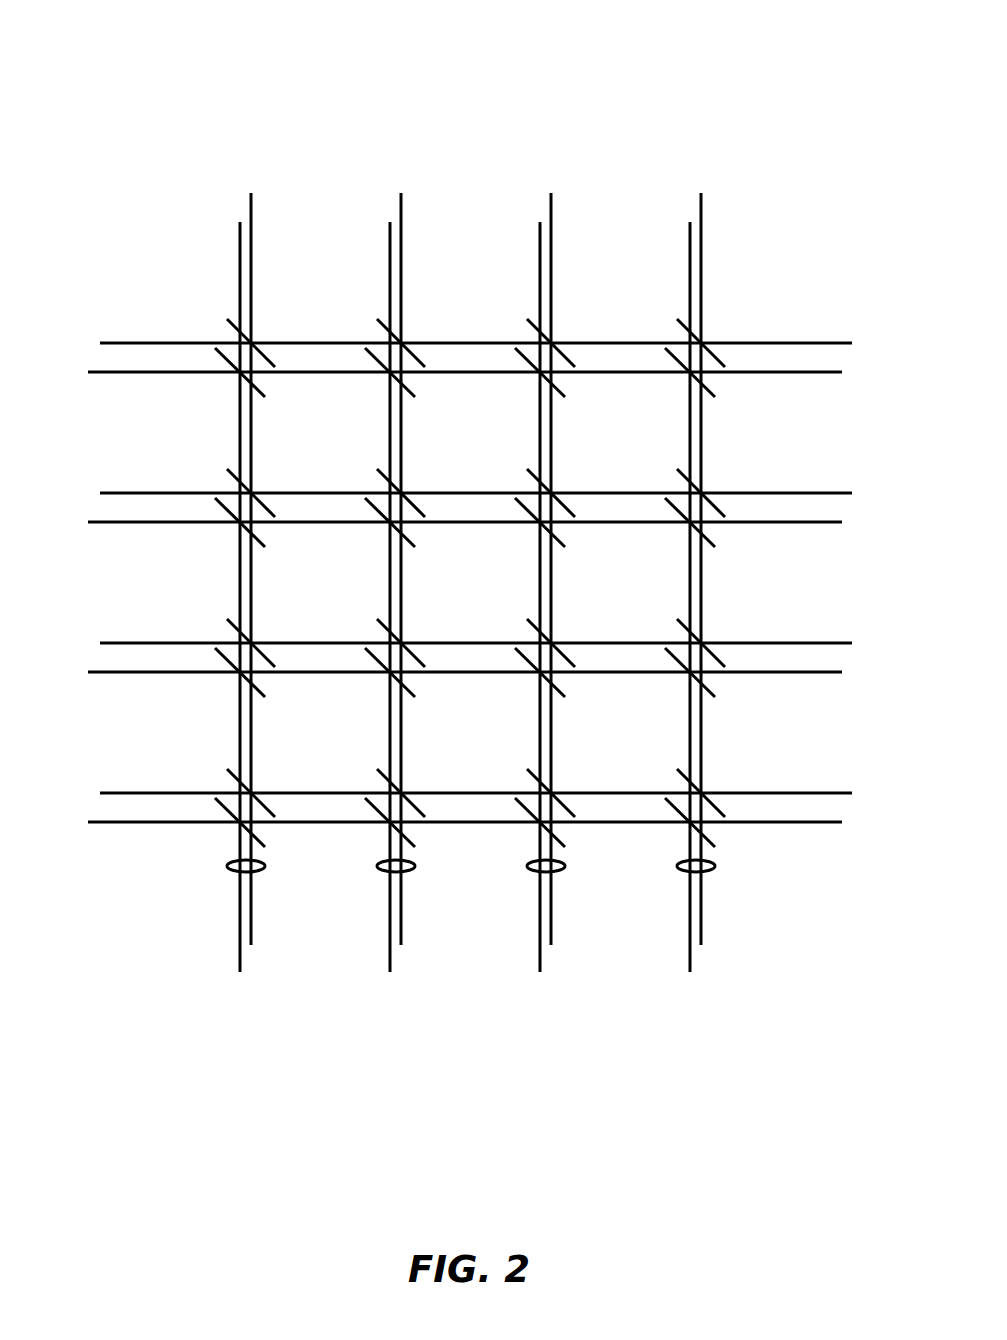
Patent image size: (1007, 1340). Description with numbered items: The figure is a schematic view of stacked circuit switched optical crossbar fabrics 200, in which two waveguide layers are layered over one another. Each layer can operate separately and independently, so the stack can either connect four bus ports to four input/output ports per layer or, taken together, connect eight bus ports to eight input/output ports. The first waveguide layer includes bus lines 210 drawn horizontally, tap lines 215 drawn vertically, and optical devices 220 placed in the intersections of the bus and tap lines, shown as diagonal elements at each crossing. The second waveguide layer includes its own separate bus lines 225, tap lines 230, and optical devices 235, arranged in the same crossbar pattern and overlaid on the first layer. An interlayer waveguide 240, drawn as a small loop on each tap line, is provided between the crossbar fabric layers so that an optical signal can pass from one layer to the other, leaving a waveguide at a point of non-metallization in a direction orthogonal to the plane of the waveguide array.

The stacked circuit switched optical crossbar fabrics 200 is at (160, 100).
The bus lines 210 is at (123, 372).
The tap lines 215 is at (540, 238).
The optical devices 220 is at (373, 352).
The bus lines 225 is at (180, 344).
The tap lines 230 is at (698, 212).
The optical devices 235 is at (713, 348).
The interlayer waveguide 240 is at (226, 866).